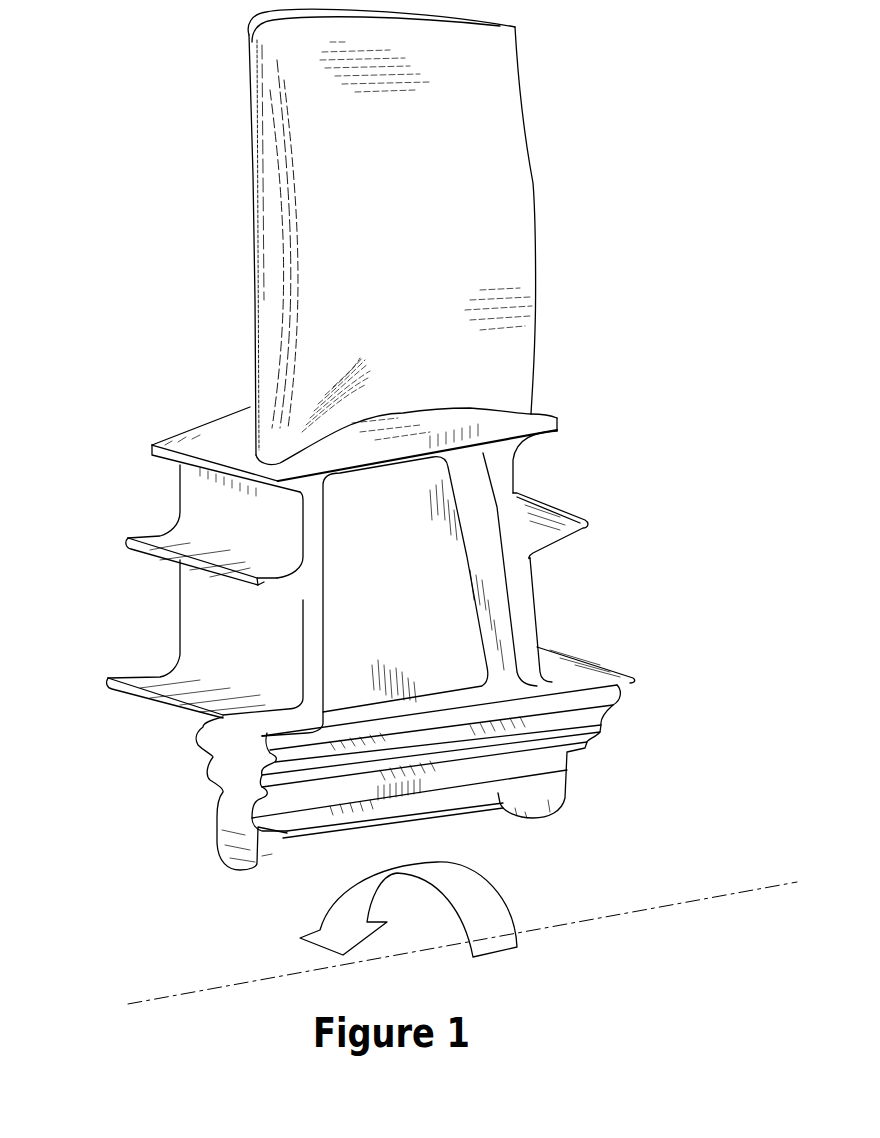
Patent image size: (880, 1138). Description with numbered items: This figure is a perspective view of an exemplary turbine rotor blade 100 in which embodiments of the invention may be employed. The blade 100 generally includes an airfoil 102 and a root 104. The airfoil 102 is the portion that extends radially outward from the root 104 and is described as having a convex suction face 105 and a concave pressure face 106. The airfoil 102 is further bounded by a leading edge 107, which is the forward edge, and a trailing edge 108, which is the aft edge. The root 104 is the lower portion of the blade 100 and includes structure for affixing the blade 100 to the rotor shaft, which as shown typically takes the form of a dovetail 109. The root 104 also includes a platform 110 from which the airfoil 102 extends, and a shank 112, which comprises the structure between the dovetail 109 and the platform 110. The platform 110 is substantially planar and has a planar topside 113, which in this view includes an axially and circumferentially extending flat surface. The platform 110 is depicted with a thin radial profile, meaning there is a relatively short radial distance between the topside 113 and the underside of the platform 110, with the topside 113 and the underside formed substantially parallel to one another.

The turbine rotor blade 100 is at (388, 447).
The airfoil 102 is at (388, 236).
The root 104 is at (435, 785).
The suction face 105 is at (236, 171).
The pressure face 106 is at (434, 283).
The leading edge 107 is at (282, 320).
The trailing edge 108 is at (535, 183).
The dovetail 109 is at (225, 855).
The platform 110 is at (340, 431).
The shank 112 is at (113, 617).
The topside 113 is at (252, 455).